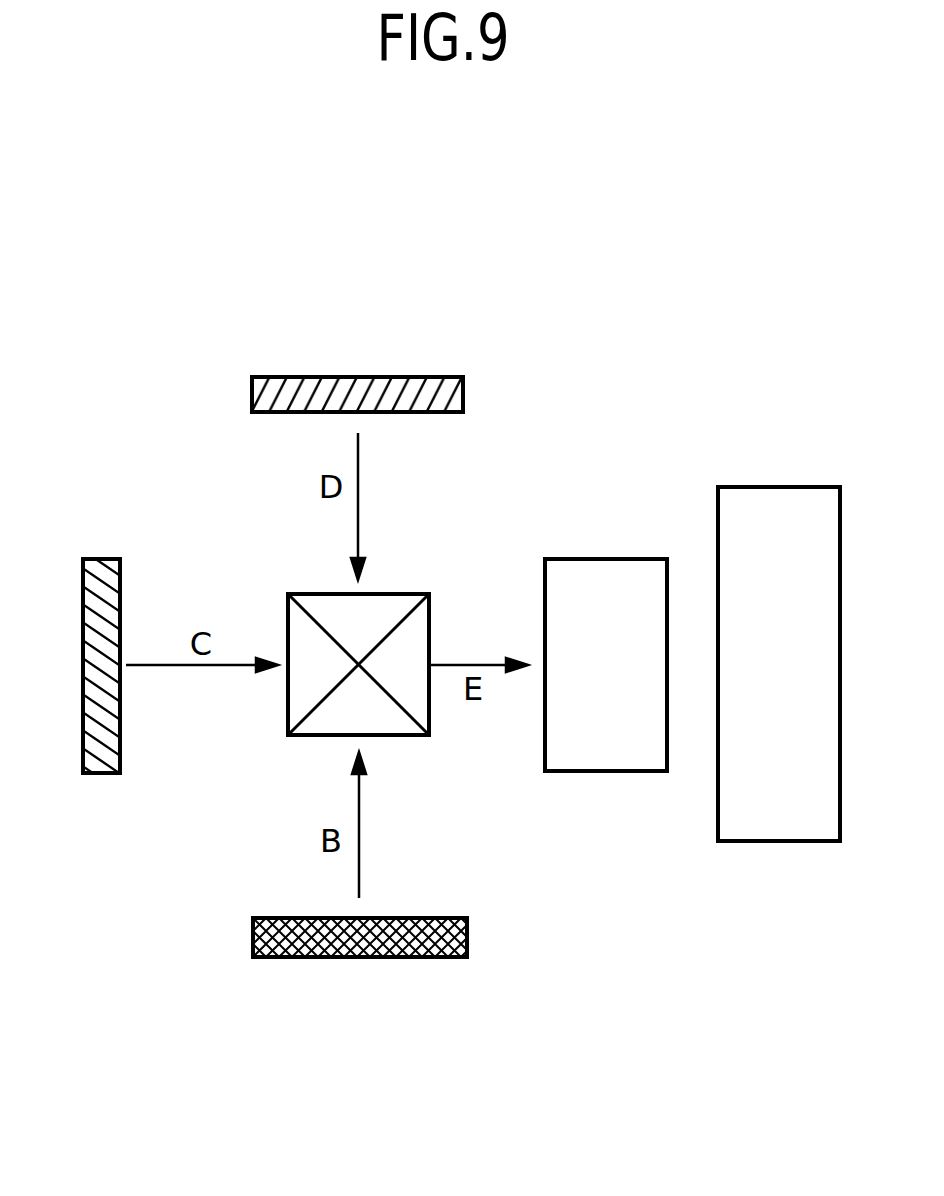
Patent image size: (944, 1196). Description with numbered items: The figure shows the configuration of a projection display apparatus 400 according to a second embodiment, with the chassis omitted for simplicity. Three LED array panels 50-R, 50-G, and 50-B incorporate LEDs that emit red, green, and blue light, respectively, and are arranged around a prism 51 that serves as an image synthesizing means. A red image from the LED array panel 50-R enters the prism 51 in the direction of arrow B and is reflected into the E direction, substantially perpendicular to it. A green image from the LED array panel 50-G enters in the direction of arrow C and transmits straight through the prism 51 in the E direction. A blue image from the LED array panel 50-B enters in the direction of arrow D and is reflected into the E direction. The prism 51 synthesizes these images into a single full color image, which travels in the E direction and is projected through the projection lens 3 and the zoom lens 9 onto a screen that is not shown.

The projection display apparatus 400 is at (377, 228).
The LED array panel 50-B is at (399, 377).
The LED array panel 50-G is at (101, 559).
The LED array panel 50-R is at (397, 957).
The prism 51 is at (405, 594).
The projection lens 3 is at (605, 559).
The zoom lens 9 is at (782, 487).